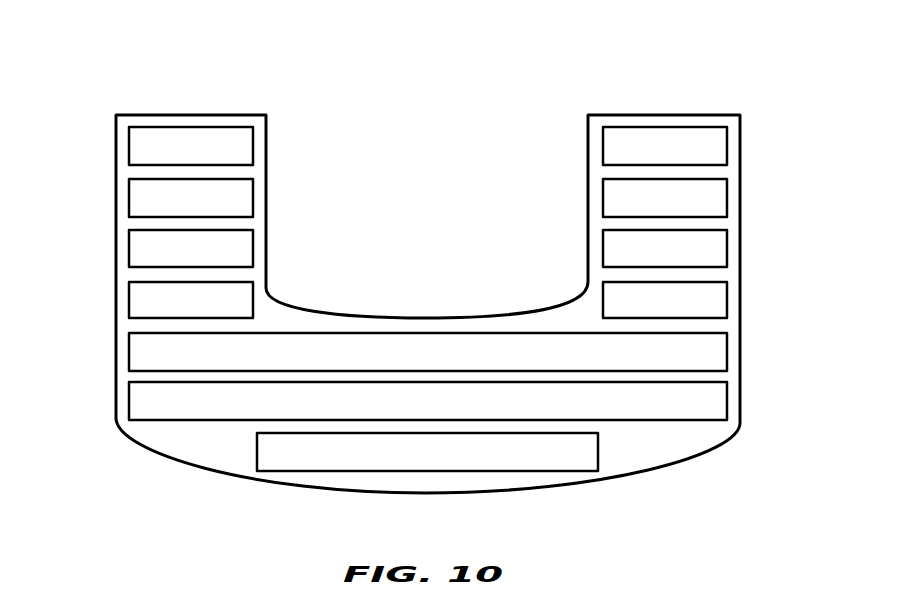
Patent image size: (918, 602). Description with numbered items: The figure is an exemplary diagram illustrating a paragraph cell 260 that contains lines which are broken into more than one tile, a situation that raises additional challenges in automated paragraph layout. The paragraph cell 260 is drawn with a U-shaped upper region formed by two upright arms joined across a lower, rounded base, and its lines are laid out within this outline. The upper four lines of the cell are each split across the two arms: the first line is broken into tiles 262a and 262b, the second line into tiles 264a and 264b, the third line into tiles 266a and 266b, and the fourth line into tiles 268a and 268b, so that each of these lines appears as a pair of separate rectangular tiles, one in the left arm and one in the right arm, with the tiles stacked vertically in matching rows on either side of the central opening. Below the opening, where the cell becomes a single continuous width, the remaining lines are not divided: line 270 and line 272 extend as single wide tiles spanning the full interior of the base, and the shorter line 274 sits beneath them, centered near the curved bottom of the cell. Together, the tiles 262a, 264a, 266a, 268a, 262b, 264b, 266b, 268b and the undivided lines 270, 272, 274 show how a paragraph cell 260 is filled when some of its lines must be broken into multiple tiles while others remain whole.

The paragraph cell 260 is at (250, 70).
The tile 262a is at (253, 147).
The tile 264a is at (253, 197).
The tile 266a is at (253, 247).
The tile 268a is at (253, 298).
The tile 262b is at (727, 147).
The tile 264b is at (727, 197).
The tile 266b is at (727, 247).
The tile 268b is at (727, 298).
The line 270 is at (129, 352).
The line 272 is at (129, 400).
The line 274 is at (257, 452).